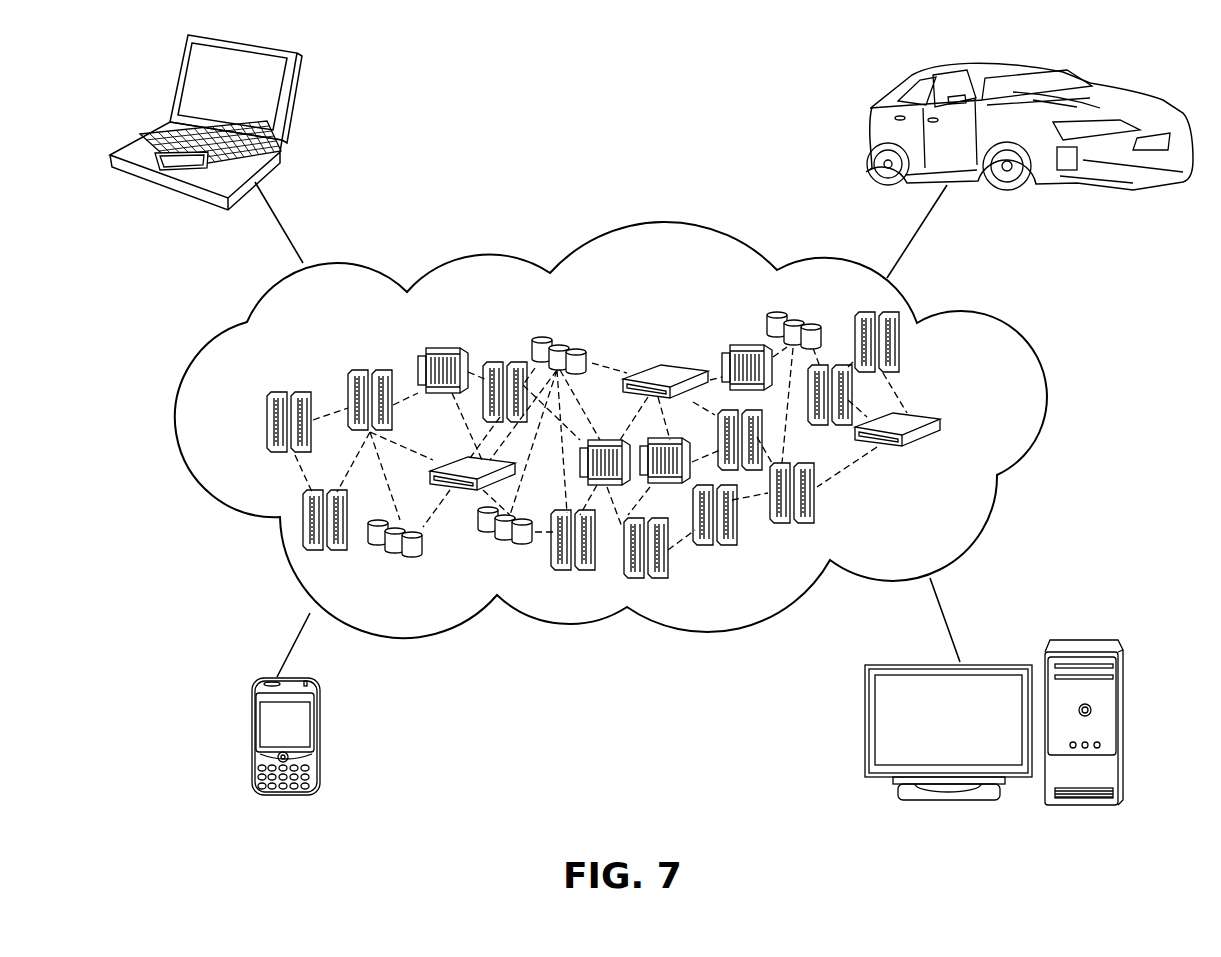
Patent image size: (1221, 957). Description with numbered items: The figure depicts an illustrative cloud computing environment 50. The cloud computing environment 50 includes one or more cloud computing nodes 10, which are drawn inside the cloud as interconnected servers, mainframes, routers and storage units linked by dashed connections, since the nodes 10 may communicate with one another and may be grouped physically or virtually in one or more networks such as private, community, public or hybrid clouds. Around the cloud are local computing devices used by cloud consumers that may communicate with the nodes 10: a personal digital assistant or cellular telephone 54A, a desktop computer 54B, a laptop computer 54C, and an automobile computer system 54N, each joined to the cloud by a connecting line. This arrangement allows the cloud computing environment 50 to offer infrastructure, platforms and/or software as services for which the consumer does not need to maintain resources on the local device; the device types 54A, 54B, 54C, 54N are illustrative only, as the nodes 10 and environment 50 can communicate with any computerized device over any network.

The cloud computing node 10 is at (979, 426).
The cloud computing environment 50 is at (1007, 340).
The personal digital assistant or cellular telephone 54A is at (250, 740).
The desktop computer 54B is at (1088, 638).
The laptop computer 54C is at (292, 103).
The automobile computer system 54N is at (877, 113).